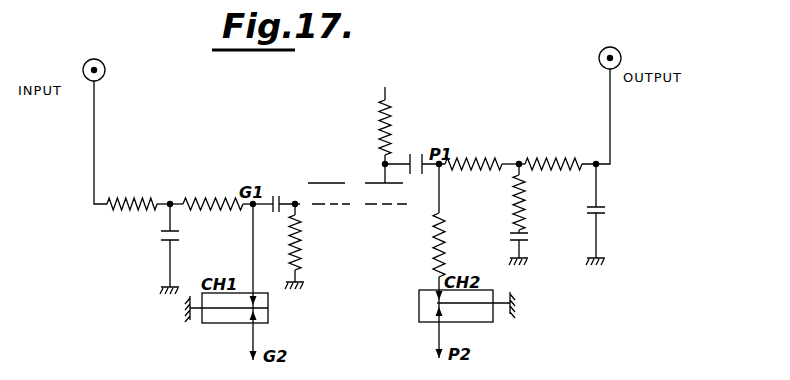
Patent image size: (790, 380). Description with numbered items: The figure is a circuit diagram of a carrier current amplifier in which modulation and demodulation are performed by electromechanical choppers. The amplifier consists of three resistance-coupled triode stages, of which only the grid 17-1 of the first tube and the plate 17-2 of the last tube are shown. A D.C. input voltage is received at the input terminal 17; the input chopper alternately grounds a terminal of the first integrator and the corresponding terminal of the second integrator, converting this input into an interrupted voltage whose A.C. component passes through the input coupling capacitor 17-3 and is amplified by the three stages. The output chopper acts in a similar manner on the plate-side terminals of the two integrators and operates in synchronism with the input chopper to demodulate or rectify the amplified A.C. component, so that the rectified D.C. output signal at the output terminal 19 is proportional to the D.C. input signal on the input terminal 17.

The input terminal 17 is at (83, 66).
The output terminal 19 is at (621, 52).
The grid of the first tube 17-1 is at (329, 205).
The plate of the last tube 17-2 is at (378, 182).
The input coupling capacitor 17-3 is at (281, 200).